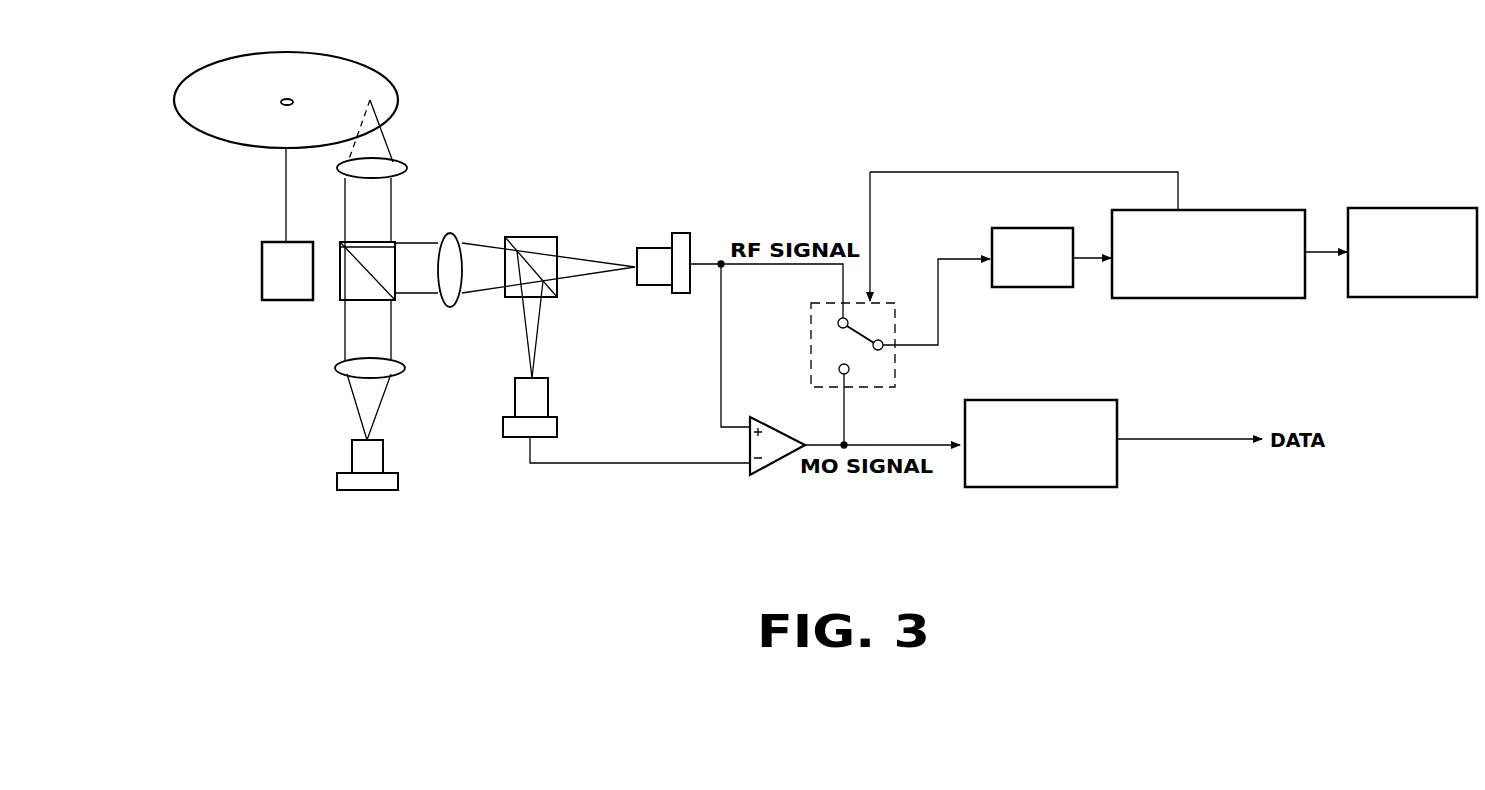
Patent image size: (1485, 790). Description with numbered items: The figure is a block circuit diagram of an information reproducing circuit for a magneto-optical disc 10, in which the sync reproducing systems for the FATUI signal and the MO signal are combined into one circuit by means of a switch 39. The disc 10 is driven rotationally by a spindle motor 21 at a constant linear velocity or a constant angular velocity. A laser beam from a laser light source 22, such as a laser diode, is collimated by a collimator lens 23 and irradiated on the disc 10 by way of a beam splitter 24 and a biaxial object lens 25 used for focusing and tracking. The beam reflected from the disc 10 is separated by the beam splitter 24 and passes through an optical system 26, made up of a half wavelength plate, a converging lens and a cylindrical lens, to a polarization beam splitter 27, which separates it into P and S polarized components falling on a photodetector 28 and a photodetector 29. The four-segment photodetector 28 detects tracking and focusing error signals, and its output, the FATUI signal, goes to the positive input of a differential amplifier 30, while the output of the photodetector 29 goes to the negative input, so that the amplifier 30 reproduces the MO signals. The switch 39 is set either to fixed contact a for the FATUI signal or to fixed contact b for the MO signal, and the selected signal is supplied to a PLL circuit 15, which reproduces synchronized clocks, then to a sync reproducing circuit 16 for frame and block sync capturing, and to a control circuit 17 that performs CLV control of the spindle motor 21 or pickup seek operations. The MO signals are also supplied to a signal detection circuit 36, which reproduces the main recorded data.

The magneto-optical disc 10 is at (390, 98).
The spindle motor 21 is at (262, 258).
The laser light source 22 is at (373, 460).
The collimator lens 23 is at (385, 370).
The beam splitter 24 is at (375, 252).
The biaxial object lens 25 is at (393, 168).
The optical system 26 is at (450, 236).
The polarization beam splitter 27 is at (532, 246).
The photodetector 28 is at (655, 248).
The photodetector 29 is at (548, 400).
The differential amplifier 30 is at (775, 430).
The switch 39 is at (812, 328).
The PLL circuit 15 is at (1040, 228).
The sync reproducing circuit 16 is at (1222, 210).
The control circuit 17 is at (1405, 215).
The signal detection circuit 36 is at (1035, 400).